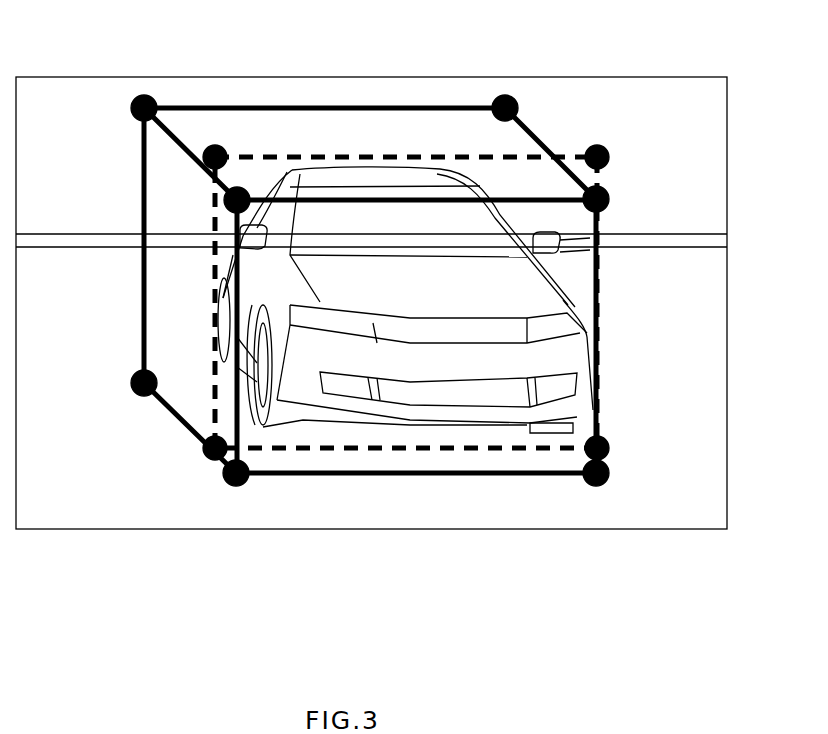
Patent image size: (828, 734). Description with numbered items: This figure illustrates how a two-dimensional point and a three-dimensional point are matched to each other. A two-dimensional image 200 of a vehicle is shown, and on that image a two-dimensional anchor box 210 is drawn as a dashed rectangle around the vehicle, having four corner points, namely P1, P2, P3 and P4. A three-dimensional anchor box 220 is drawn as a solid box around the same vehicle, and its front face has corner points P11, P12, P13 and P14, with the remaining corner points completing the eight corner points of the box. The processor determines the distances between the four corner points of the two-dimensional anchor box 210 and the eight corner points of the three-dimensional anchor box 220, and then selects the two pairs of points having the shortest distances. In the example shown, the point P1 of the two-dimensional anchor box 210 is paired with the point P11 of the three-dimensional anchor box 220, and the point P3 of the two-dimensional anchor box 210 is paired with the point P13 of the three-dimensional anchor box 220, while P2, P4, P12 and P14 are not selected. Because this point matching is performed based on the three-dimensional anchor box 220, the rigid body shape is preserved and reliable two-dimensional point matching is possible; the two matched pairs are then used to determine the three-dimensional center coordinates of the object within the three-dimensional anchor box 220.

The 2D image 200 is at (200, 75).
The 2D anchor box 210 is at (422, 155).
The 3D anchor box 220 is at (312, 106).
The corner point of the 2D anchor box P1 is at (212, 142).
The corner point of the 2D anchor box P2 is at (599, 142).
The corner point of the 2D anchor box P3 is at (617, 449).
The corner point of the 2D anchor box P4 is at (198, 455).
The corner point of the 3D anchor box P11 is at (210, 201).
The corner point of the 3D anchor box P12 is at (623, 200).
The corner point of the 3D anchor box P13 is at (597, 490).
The corner point of the 3D anchor box P14 is at (235, 490).